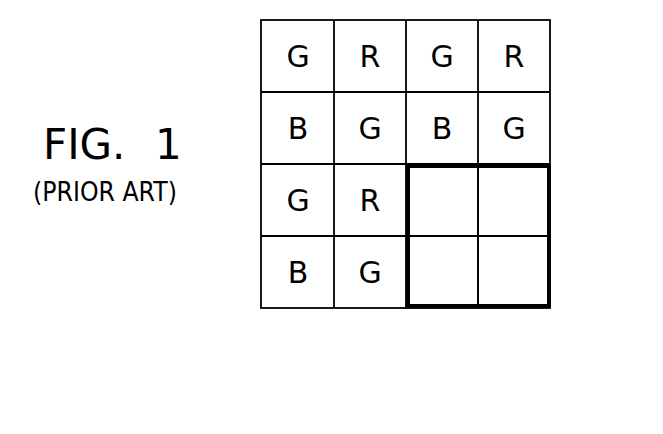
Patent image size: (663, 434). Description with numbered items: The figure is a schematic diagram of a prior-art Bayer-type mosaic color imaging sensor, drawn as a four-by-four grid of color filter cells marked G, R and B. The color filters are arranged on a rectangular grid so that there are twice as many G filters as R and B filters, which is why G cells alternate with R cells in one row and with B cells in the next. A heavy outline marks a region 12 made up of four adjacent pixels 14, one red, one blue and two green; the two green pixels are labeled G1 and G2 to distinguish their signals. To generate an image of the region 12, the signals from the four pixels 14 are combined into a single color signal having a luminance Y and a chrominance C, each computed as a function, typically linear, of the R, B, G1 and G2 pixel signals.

The region 12 is at (551, 218).
The pixel 14 is at (537, 184).
The G1 pixel signal G1 is at (443, 201).
The G2 pixel signal G2 is at (513, 271).